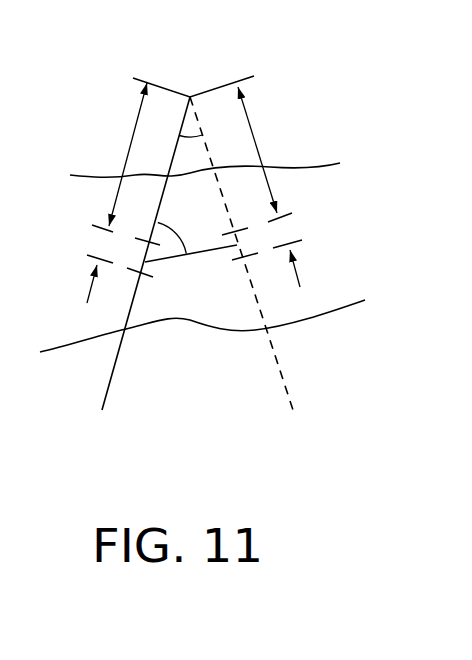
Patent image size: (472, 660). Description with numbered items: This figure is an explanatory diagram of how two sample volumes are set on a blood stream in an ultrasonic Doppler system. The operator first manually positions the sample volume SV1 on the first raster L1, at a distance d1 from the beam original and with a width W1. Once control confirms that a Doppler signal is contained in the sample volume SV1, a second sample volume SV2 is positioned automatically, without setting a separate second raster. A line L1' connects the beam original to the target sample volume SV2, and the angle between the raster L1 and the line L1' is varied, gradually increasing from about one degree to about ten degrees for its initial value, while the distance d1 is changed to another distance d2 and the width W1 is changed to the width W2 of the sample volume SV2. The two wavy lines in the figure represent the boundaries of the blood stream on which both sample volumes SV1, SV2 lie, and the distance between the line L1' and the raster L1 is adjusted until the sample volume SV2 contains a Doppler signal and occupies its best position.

The first raster L1 is at (135, 272).
The line connecting beam original and sample volume SV2 L1' is at (257, 271).
The distance from beam original to sample volume SV1 d1 is at (116, 154).
The distance from beam original to sample volume SV2 d2 is at (269, 150).
The width of sample volume SV1 W1 is at (104, 264).
The width of sample volume SV2 W2 is at (284, 249).
The sample volume SV1 is at (152, 275).
The sample volume SV2 is at (240, 262).